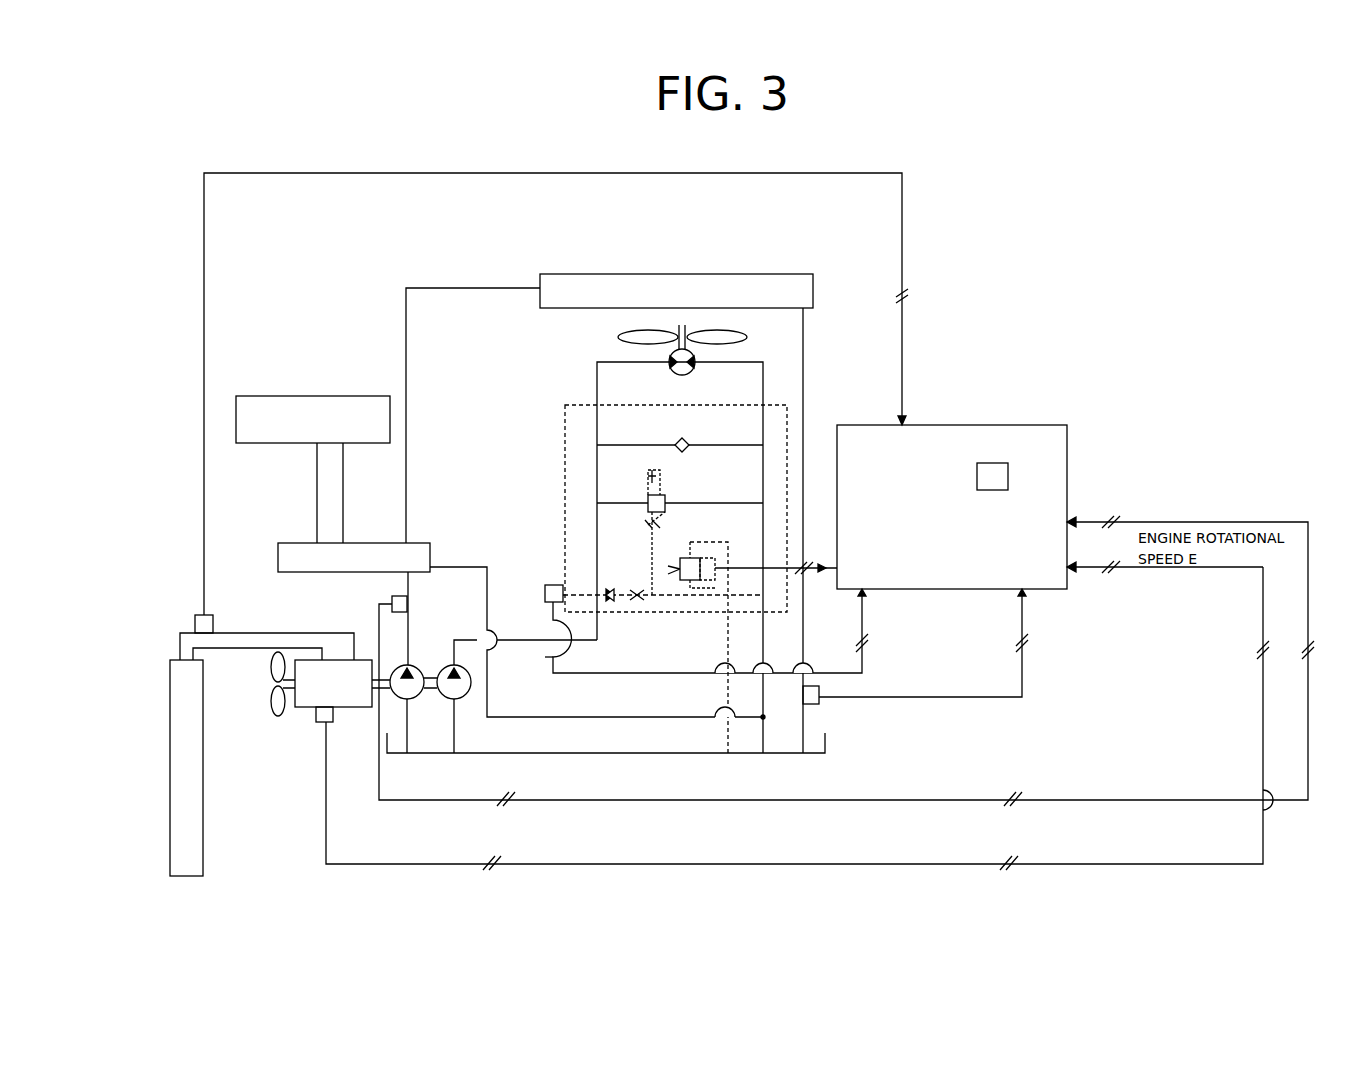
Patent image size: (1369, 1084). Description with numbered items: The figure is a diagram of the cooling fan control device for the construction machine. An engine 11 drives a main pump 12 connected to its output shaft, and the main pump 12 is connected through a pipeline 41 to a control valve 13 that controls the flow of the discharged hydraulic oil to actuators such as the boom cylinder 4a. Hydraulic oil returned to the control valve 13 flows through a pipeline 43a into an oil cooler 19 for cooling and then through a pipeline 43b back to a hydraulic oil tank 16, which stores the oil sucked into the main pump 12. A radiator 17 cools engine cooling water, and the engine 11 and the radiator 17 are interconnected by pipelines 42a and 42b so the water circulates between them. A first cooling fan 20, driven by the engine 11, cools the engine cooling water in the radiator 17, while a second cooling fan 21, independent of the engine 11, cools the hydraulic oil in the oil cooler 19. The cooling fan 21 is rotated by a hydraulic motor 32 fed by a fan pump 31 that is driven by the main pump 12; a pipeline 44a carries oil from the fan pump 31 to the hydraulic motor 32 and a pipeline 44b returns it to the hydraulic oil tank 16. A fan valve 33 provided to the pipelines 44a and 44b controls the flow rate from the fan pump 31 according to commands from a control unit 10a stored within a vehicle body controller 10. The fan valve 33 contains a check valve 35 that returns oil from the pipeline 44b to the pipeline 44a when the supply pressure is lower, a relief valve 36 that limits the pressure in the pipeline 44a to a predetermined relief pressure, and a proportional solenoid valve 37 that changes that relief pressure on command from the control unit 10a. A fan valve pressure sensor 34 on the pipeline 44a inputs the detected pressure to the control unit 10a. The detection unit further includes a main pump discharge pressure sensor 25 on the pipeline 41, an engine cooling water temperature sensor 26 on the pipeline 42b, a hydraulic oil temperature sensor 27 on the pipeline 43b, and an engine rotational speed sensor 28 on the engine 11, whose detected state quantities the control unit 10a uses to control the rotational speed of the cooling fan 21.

The boom cylinder 4a is at (236, 418).
The vehicle body controller 10 is at (1058, 420).
The control unit 10a is at (1008, 476).
The engine 11 is at (304, 696).
The main pump 12 is at (412, 675).
The control valve 13 is at (293, 576).
The hydraulic oil tank 16 is at (595, 756).
The radiator 17 is at (168, 748).
The oil cooler 19 is at (797, 294).
The first cooling fan 20 is at (273, 694).
The second cooling fan 21 is at (620, 336).
The main pump discharge pressure sensor 25 is at (408, 604).
The engine cooling water temperature sensor 26 is at (195, 617).
The hydraulic oil temperature sensor 27 is at (822, 706).
The engine rotational speed sensor 28 is at (324, 722).
The fan pump 31 is at (466, 695).
The hydraulic motor 32 is at (670, 372).
The fan valve 33 is at (560, 476).
The fan valve pressure sensor 34 is at (545, 593).
The check valve 35 is at (686, 443).
The relief valve 36 is at (648, 503).
The proportional solenoid valve 37 is at (690, 582).
The pipeline 41 is at (400, 583).
The pipeline 42a is at (227, 650).
The pipeline 42b is at (229, 632).
The pipeline 43a is at (406, 365).
The pipeline 43b is at (805, 342).
The pipeline 44a is at (597, 428).
The pipeline 44b is at (765, 478).